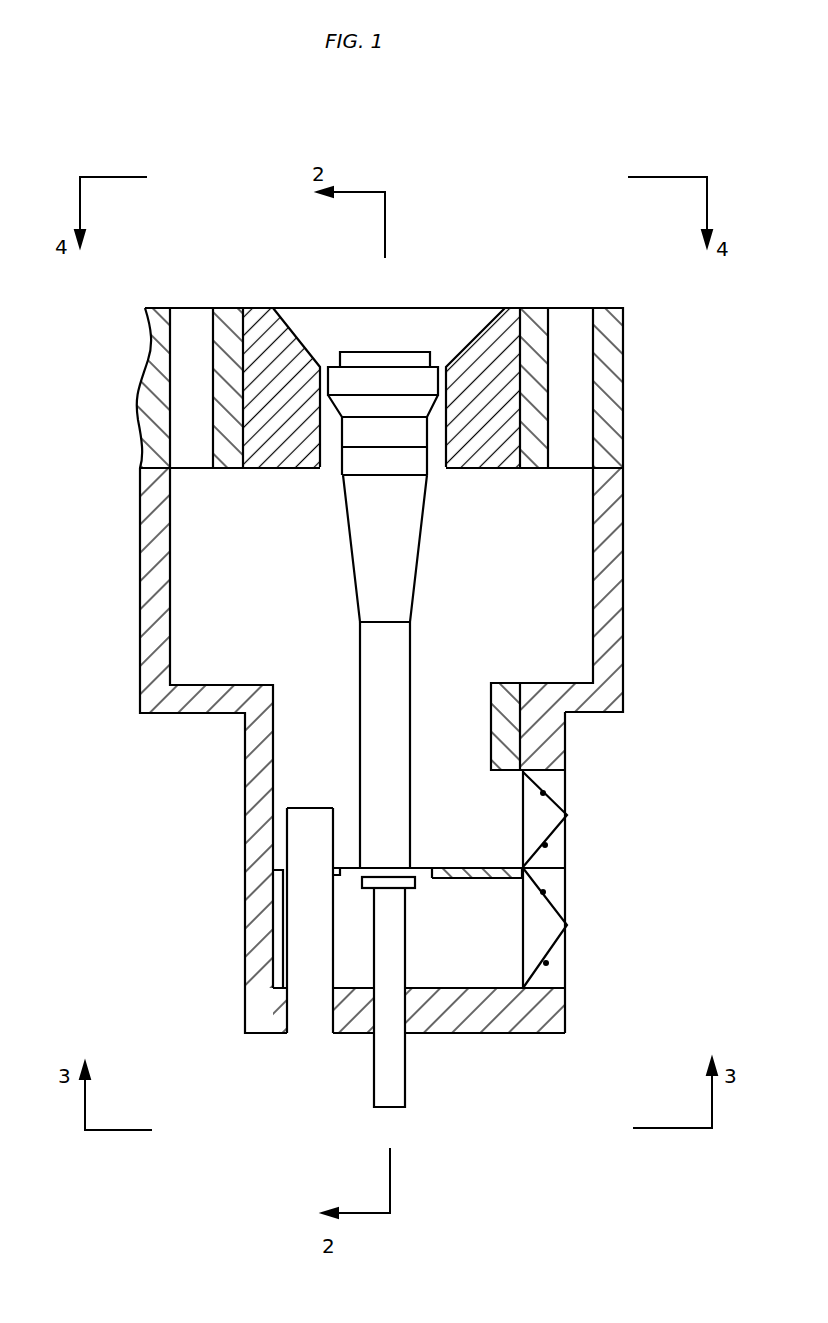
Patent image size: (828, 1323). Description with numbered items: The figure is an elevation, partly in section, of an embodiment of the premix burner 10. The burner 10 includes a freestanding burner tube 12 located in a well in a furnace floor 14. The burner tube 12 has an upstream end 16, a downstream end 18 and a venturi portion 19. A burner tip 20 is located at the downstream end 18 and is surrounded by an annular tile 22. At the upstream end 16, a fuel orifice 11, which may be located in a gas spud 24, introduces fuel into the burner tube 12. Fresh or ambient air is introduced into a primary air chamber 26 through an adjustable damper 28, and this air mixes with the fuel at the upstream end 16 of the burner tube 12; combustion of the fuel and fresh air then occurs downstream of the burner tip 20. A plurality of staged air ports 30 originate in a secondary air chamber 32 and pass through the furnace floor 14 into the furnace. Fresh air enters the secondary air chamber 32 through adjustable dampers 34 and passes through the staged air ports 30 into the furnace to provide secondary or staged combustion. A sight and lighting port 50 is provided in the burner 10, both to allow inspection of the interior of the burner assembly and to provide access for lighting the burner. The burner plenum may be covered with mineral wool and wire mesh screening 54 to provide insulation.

The burner 10 is at (449, 256).
The fuel orifice 11 is at (383, 877).
The burner tube 12 is at (412, 695).
The furnace floor 14 is at (157, 308).
The upstream end 16 is at (410, 850).
The downstream end 18 is at (357, 352).
The venturi portion 19 is at (352, 575).
The burner tip 20 is at (389, 352).
The annular tile 22 is at (508, 308).
The gas spud 24 is at (370, 890).
The primary air chamber 26 is at (480, 946).
The adjustable damper 28 is at (567, 943).
The staged air ports 30 is at (206, 338).
The secondary air chamber 32 is at (530, 636).
The adjustable dampers 34 is at (567, 843).
The sight and lighting port 50 is at (324, 956).
The mineral wool and wire mesh screening 54 is at (535, 1033).